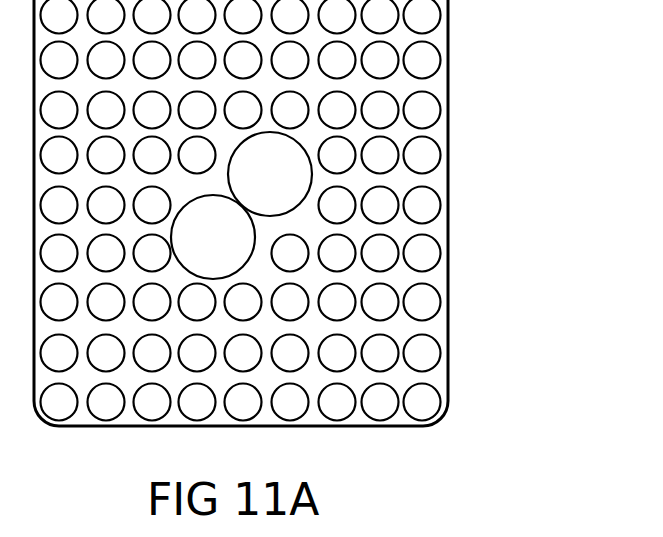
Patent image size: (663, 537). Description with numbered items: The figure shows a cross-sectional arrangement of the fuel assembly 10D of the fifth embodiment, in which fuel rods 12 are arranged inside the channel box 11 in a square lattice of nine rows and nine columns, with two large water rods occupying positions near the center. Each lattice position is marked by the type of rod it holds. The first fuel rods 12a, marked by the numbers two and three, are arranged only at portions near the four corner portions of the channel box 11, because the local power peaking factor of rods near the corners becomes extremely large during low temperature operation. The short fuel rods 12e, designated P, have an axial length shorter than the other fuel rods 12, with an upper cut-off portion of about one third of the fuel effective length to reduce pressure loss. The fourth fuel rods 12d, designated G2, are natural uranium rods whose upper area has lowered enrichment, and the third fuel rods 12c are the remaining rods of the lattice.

The fuel assembly 10D is at (466, 74).
The channel box 11 is at (448, 122).
The fuel rods 12 is at (533, 160).
The first fuel rods 12a is at (467, 378).
The third fuel rods 12c is at (423, 278).
The fourth fuel rod 12d is at (424, 218).
The short fuel rod 12e is at (445, 190).